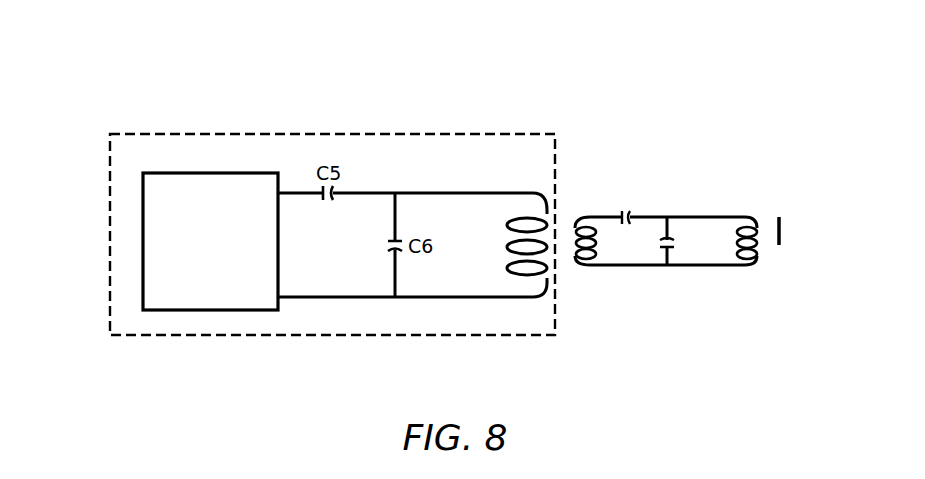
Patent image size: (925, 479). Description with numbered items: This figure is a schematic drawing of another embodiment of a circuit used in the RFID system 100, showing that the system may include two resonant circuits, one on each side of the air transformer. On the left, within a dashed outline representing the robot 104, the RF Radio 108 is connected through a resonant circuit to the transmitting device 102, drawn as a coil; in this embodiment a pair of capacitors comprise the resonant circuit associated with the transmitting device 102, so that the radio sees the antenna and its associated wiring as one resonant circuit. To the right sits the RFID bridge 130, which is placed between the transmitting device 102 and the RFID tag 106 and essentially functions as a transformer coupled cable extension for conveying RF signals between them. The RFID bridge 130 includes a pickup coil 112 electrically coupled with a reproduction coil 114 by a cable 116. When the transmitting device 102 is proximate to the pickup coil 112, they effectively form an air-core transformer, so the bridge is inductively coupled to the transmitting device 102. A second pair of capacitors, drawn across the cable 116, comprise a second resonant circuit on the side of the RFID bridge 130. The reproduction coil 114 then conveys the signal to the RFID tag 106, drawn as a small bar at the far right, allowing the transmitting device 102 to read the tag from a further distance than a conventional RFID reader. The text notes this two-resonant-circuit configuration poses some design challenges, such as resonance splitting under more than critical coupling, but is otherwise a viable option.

The RFID system 100 is at (416, 70).
The transmitting device 102 is at (533, 193).
The robot 104 is at (110, 178).
The RFID tag 106 is at (779, 217).
The RF radio 108 is at (217, 173).
The pickup coil 112 is at (582, 265).
The reproduction coil 114 is at (752, 265).
The cable 116 is at (655, 265).
The RFID bridge 130 is at (701, 214).